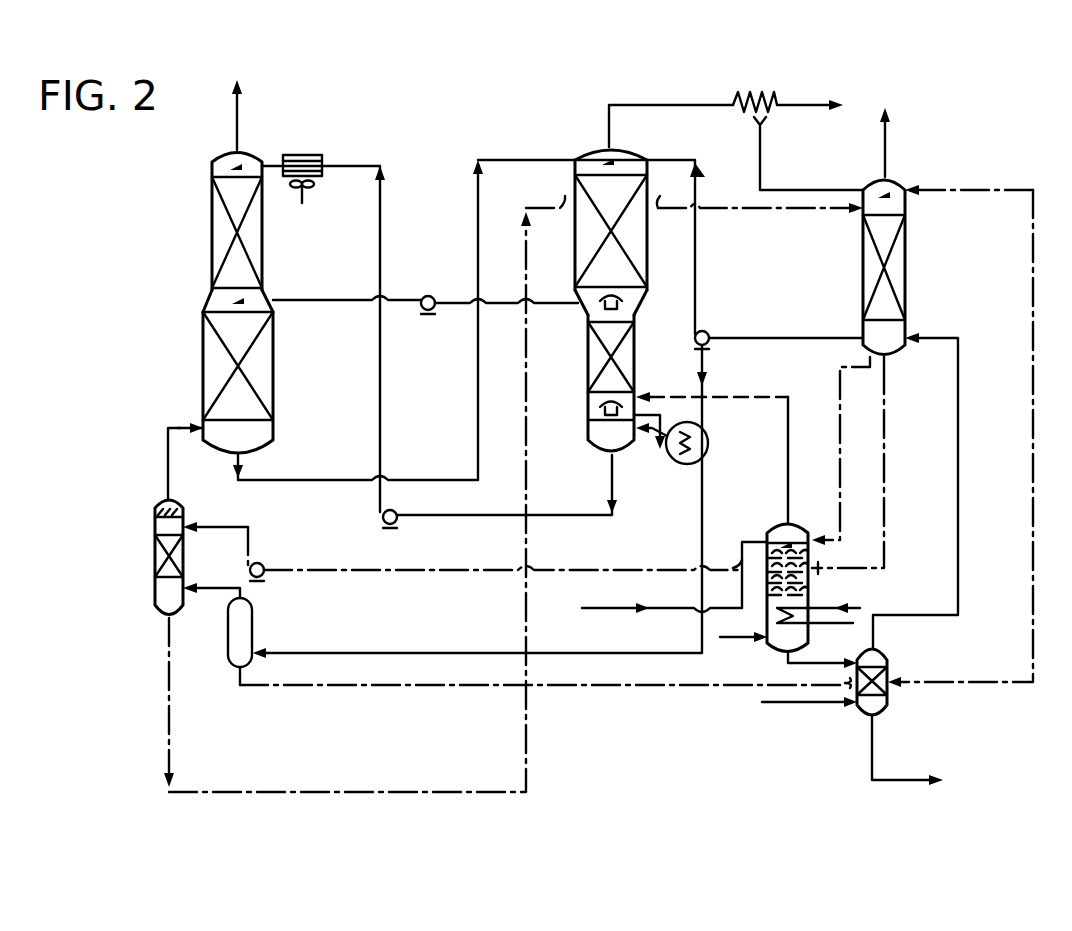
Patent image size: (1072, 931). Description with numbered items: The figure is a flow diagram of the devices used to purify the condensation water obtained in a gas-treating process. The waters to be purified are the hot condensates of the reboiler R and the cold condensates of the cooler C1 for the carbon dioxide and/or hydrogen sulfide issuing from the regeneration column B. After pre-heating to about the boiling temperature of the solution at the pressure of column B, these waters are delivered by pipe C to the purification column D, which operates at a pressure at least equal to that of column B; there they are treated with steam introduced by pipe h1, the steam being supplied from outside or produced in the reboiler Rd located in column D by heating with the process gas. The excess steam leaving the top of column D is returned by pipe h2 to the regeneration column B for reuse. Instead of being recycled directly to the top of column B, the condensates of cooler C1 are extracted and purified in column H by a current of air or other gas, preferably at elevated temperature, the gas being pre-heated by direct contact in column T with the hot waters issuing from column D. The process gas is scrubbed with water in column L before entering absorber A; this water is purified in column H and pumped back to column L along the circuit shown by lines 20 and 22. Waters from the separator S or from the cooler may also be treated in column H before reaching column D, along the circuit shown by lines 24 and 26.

The absorber A is at (226, 303).
The regeneration column B is at (604, 300).
The pipe C is at (674, 577).
The cooler C1 is at (808, 153).
The purification column D is at (798, 588).
The column H is at (895, 267).
The column L is at (157, 557).
The reboiler R is at (671, 454).
The reboiler Rd is at (818, 626).
The separator S is at (228, 634).
The column T is at (852, 717).
The pipe h1 is at (743, 650).
The pipe h2 is at (713, 445).
The line 20 is at (883, 478).
The line 22 is at (360, 792).
The line 24 is at (366, 690).
The line 26 is at (838, 472).